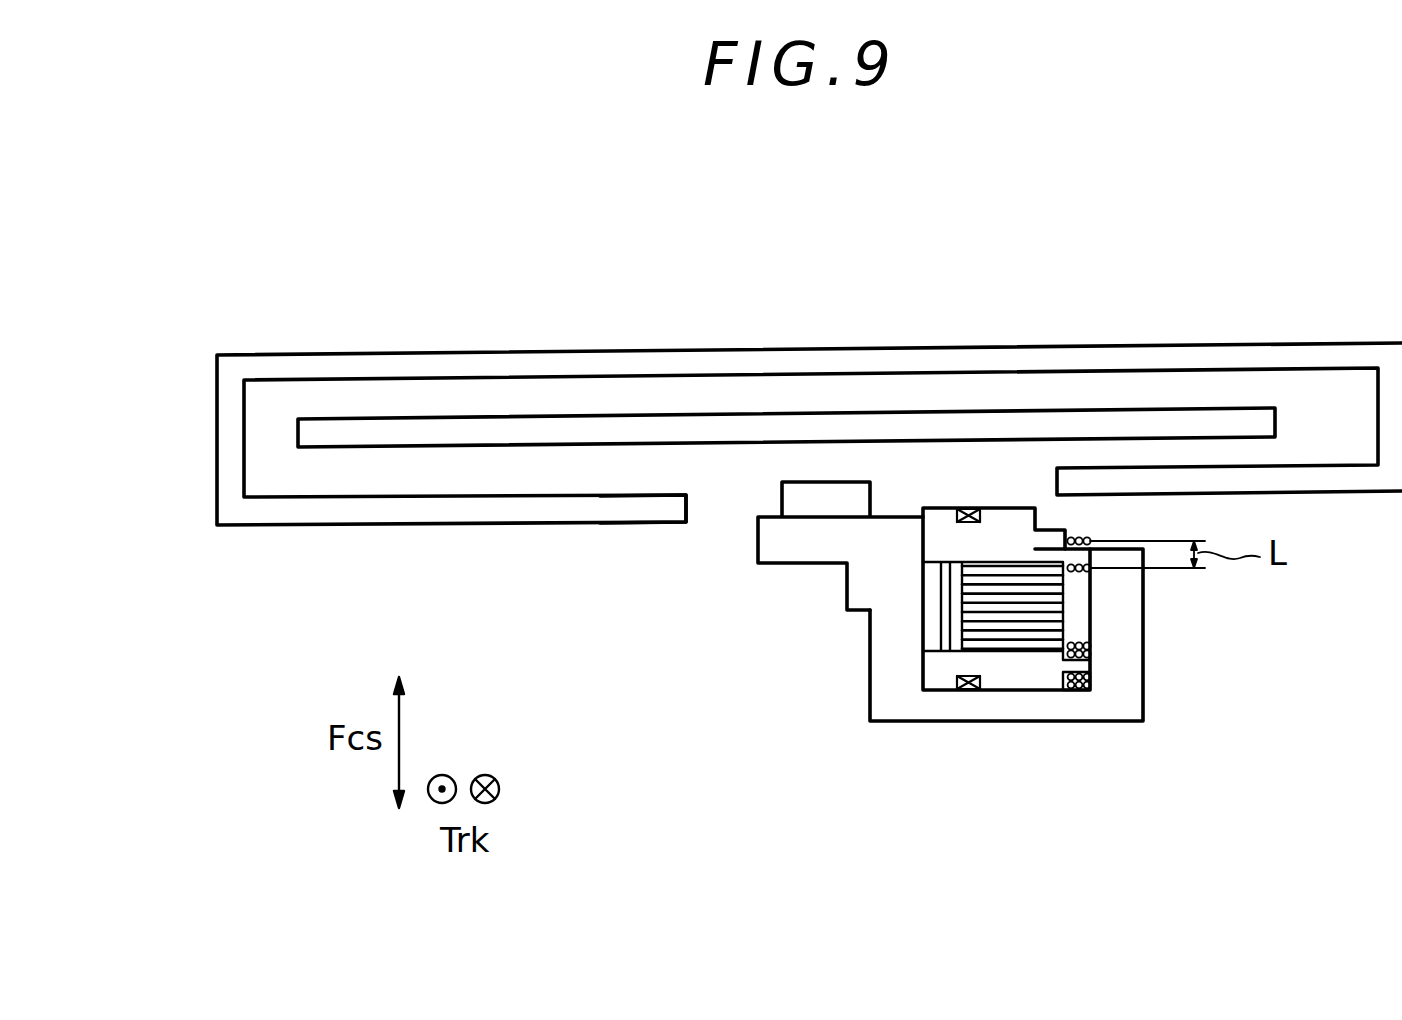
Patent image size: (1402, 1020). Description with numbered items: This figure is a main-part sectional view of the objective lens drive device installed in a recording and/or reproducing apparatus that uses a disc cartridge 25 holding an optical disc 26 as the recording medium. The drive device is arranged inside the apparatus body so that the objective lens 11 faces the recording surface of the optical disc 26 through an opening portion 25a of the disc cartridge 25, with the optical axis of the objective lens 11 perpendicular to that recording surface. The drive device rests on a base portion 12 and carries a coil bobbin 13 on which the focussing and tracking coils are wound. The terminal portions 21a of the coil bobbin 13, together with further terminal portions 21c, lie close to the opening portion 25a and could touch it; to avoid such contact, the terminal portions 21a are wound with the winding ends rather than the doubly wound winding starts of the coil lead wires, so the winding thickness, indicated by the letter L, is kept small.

The disc cartridge 25 is at (1128, 353).
The opening portion 25a is at (688, 508).
The optical disc 26 is at (947, 417).
The objective lens 11 is at (812, 498).
The base frame 12 is at (1034, 720).
The coil bobbin 13 is at (930, 658).
The terminal portion 21a is at (1092, 569).
The lower coil 21c is at (1090, 662).